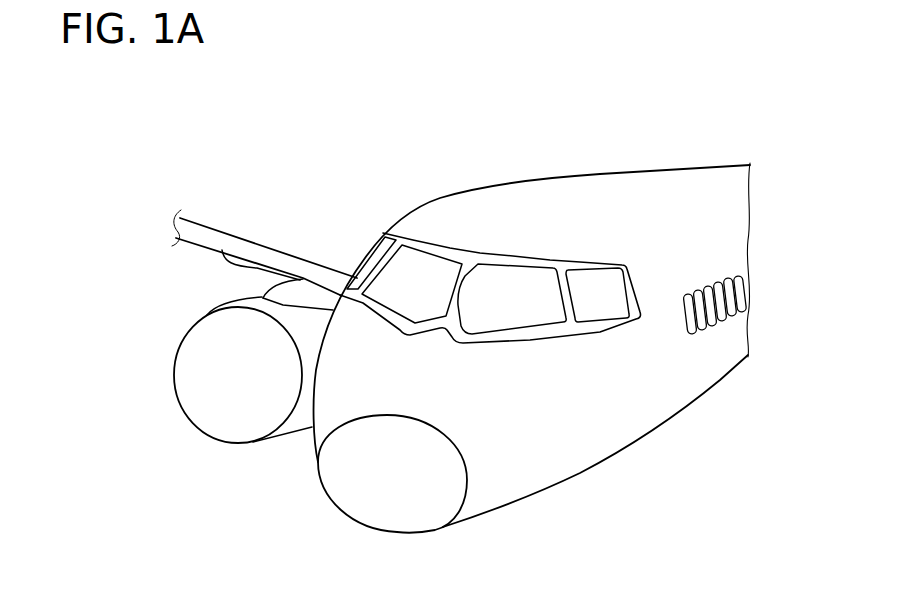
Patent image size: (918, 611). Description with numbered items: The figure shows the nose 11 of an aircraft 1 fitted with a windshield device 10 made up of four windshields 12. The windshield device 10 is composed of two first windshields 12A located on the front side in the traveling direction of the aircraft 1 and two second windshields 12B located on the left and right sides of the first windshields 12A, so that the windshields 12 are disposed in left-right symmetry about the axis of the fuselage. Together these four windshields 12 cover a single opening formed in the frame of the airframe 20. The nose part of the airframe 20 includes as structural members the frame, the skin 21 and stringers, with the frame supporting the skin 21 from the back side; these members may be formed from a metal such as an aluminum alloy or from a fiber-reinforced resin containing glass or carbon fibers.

The aircraft 1 is at (751, 88).
The windshield device 10 is at (293, 108).
The nose 11 is at (470, 522).
The windshield 12 is at (462, 218).
The first windshield 12A is at (428, 282).
The second windshield 12B is at (353, 282).
The airframe 20 is at (712, 168).
The skin 21 is at (623, 433).